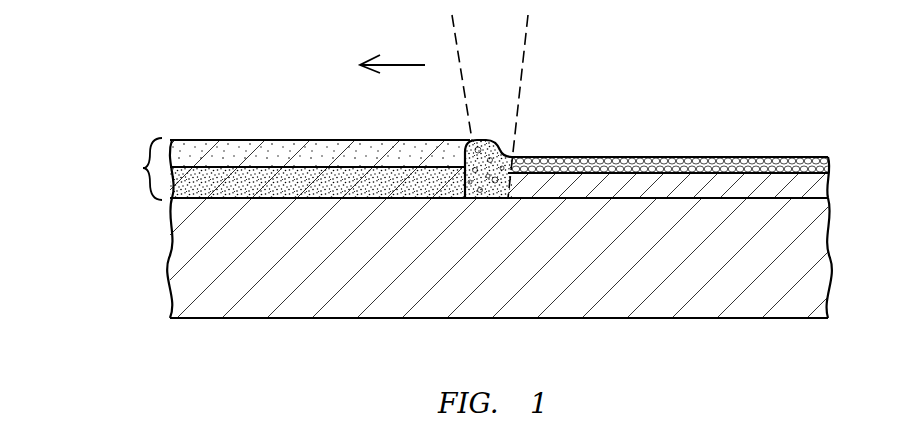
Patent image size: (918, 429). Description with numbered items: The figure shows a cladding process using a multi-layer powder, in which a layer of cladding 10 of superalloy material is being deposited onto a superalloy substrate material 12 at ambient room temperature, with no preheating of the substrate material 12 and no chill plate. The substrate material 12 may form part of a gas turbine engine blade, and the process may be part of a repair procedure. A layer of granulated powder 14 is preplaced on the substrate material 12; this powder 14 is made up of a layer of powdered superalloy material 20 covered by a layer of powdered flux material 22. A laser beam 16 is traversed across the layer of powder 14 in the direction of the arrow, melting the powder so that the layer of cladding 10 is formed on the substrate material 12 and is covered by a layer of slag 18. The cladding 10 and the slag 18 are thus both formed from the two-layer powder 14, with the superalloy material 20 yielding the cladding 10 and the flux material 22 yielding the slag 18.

The layer of cladding 10 is at (816, 192).
The substrate material 12 is at (818, 263).
The layer of granulated powder 14 is at (143, 168).
The laser beam 16 is at (520, 62).
The layer of slag 18 is at (817, 166).
The layer of powdered superalloy material 20 is at (237, 183).
The layer of powdered flux material 22 is at (308, 152).